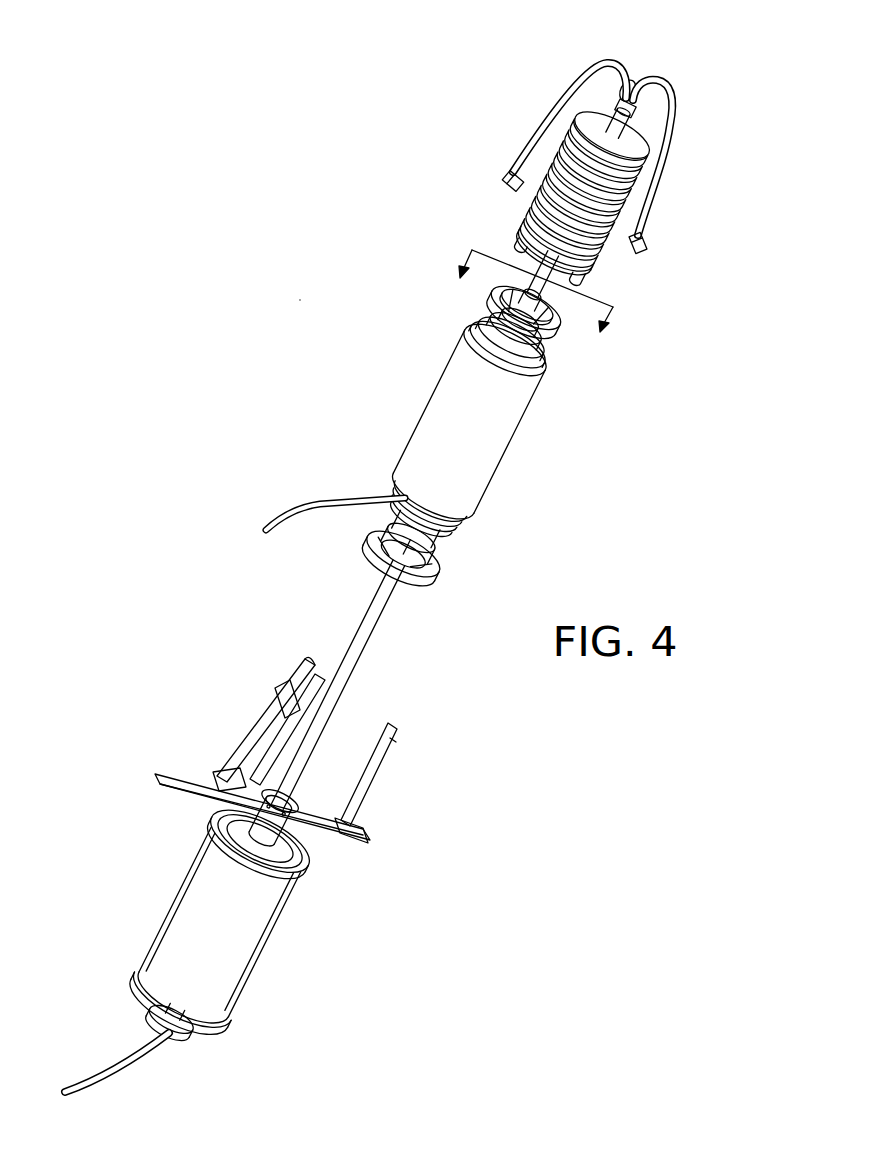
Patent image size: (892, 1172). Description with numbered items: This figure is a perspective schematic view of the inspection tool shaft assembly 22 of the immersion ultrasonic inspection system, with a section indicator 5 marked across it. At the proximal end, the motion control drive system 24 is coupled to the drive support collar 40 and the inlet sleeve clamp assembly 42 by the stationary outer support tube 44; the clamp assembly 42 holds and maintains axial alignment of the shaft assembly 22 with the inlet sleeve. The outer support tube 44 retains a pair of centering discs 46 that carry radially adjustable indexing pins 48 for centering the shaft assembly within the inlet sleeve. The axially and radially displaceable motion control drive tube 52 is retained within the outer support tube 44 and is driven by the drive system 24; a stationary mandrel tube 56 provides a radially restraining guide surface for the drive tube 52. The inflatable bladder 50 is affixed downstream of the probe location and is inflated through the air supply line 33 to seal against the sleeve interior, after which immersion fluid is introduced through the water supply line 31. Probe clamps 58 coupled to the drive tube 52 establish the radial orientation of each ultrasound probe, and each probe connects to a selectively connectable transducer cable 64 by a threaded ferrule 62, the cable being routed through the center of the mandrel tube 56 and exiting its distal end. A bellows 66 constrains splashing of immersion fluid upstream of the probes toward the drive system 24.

The inspection tool shaft assembly 22 is at (307, 442).
The motion control drive system 24 is at (240, 933).
The water supply line 31 is at (158, 783).
The air supply line 33 is at (312, 510).
The drive support collar 40 is at (310, 838).
The inlet sleeve clamp assembly 42 is at (385, 796).
The outer support tube 44 is at (337, 690).
The centering discs 46 is at (557, 323).
The indexing pins 48 is at (490, 307).
The inflatable bladder 50 is at (437, 430).
The motion control drive tube 52 is at (637, 126).
The mandrel tube 56 is at (627, 96).
The probe clamps 58 is at (523, 243).
The threaded ferrule 62 is at (511, 173).
The transducer cable 64 is at (563, 110).
The bellows 66 is at (623, 192).
The section line 5 is at (530, 309).